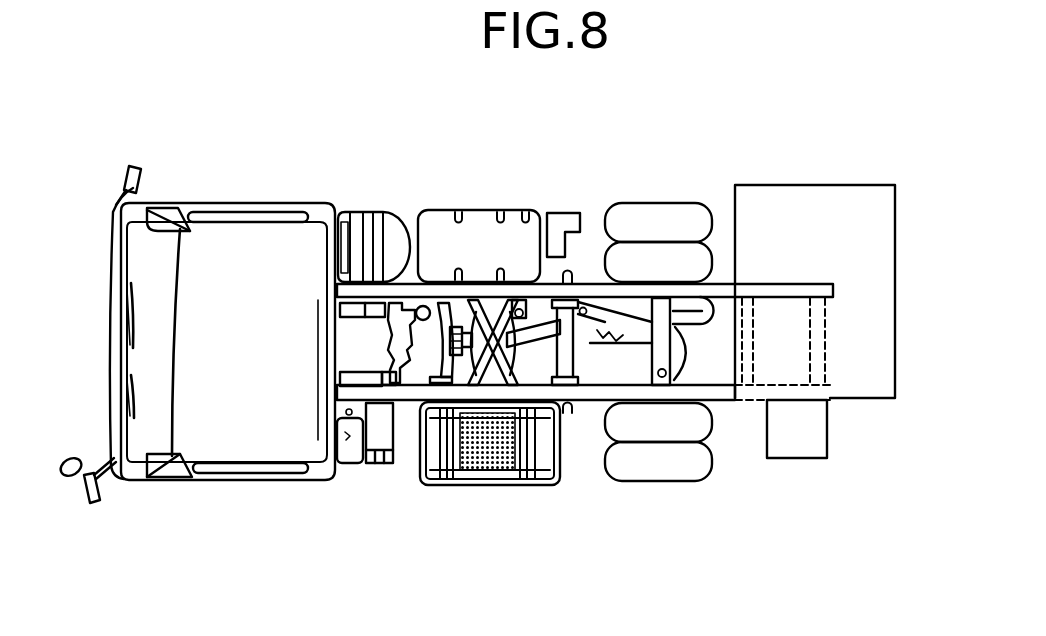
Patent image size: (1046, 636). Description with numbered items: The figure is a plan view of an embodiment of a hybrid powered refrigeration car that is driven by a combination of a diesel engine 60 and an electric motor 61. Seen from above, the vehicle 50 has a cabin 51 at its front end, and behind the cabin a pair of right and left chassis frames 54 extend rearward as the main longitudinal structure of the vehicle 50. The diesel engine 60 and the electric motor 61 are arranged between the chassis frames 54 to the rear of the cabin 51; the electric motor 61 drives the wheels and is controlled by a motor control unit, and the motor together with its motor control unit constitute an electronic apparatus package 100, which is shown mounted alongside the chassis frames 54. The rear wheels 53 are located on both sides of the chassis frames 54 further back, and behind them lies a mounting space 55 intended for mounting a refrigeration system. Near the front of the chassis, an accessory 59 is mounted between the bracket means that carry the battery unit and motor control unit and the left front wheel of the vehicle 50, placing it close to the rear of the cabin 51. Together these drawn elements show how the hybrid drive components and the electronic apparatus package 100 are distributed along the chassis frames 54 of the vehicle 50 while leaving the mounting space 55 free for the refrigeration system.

The vehicle 50 is at (472, 190).
The cabin 51 is at (237, 482).
The rear wheels 53 is at (672, 201).
The pair of right and left chassis frames 54 is at (597, 392).
The mounting space 55 is at (810, 185).
The accessory 59 is at (373, 442).
The diesel engine 60 is at (353, 347).
The electric motor 61 is at (390, 314).
The electronic apparatus package 100 is at (437, 490).